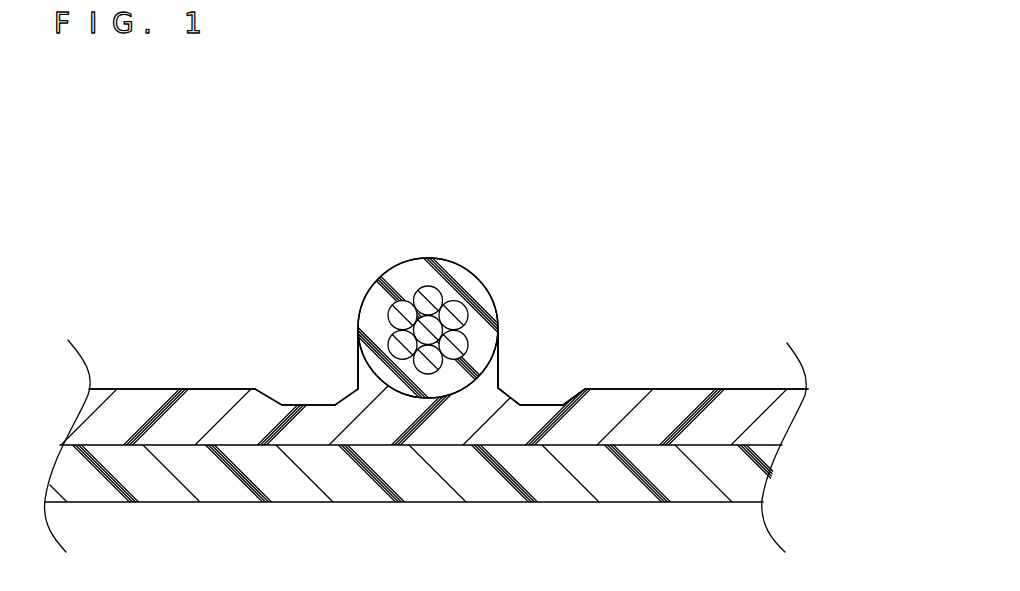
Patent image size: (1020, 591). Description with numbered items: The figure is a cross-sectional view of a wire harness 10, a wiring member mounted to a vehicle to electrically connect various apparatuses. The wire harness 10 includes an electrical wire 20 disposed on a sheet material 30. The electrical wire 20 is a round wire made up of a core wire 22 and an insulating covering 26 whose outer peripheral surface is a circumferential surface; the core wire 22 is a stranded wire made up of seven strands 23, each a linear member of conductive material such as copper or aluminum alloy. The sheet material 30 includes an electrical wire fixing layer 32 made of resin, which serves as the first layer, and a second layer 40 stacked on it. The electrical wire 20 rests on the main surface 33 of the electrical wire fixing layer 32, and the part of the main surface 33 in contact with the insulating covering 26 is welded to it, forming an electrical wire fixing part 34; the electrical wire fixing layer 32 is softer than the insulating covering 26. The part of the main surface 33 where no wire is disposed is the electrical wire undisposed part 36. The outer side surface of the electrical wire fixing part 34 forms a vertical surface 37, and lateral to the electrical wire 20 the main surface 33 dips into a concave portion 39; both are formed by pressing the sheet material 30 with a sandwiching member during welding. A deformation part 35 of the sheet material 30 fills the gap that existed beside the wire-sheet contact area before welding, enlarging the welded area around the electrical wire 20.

The wire harness 10 is at (102, 126).
The electrical wire 20 is at (428, 281).
The core wire 22 is at (436, 281).
The strand 23 is at (485, 220).
The insulating covering 26 is at (408, 282).
The sheet material 30 is at (443, 441).
The electrical wire fixing layer 32 is at (783, 424).
The main surface 33 is at (246, 389).
The electrical wire fixing part 34 is at (465, 422).
The deformation part 35 is at (370, 392).
The electrical wire undisposed part 36 is at (702, 389).
The vertical surface 37 is at (355, 358).
The concave portion 39 is at (306, 405).
The second layer 40 is at (437, 473).